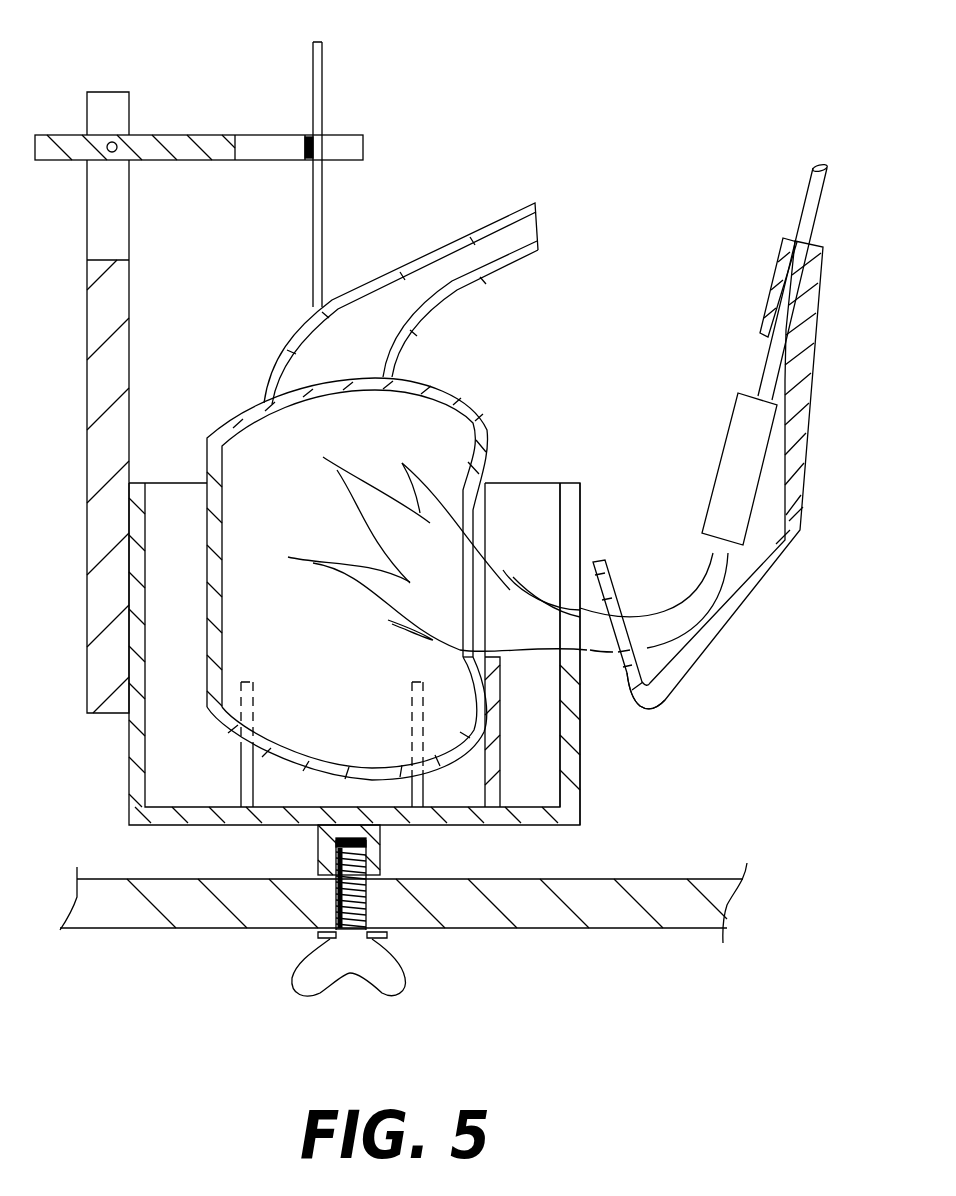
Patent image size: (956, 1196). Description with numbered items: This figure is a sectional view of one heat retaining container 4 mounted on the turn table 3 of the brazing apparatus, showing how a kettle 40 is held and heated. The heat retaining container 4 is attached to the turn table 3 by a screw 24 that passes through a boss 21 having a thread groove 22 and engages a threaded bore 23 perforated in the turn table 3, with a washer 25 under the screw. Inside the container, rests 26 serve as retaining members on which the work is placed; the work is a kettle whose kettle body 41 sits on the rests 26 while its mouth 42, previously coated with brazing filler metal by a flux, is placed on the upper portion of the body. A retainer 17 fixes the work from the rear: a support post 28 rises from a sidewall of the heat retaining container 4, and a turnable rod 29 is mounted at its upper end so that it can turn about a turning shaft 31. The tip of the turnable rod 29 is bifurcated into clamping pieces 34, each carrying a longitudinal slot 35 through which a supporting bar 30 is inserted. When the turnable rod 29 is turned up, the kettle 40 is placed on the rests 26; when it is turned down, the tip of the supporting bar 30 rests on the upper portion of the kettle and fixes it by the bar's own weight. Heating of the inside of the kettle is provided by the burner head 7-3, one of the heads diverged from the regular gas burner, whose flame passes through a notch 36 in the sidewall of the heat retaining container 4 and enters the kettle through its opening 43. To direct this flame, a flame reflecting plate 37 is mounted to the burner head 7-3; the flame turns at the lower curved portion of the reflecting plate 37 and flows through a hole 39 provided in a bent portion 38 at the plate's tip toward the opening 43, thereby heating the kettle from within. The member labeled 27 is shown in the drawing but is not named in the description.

The turn table 3 is at (688, 918).
The heat retaining container 4 is at (135, 750).
The burner head 7-3 is at (760, 445).
The retainer 17 is at (82, 275).
The boss 21 is at (318, 853).
The thread groove 22 is at (333, 878).
The threaded bore 23 is at (377, 908).
The screw 24 is at (375, 994).
The washer 25 is at (318, 935).
The rest 26 is at (241, 787).
The spacer 27 is at (487, 790).
The support post 28 is at (85, 350).
The turnable rod 29 is at (177, 137).
The supporting bar 30 is at (323, 93).
The turning shaft 31 is at (108, 141).
The clamping pieces 34 is at (255, 137).
The longitudinal slot 35 is at (308, 160).
The notch 36 is at (580, 507).
The flame reflecting plate 37 is at (743, 618).
The bent portion 38 is at (627, 687).
The hole 39 is at (615, 612).
The kettle 40 is at (555, 347).
The kettle body 41 is at (442, 435).
The mouth 42 is at (397, 272).
The opening 43 is at (467, 525).